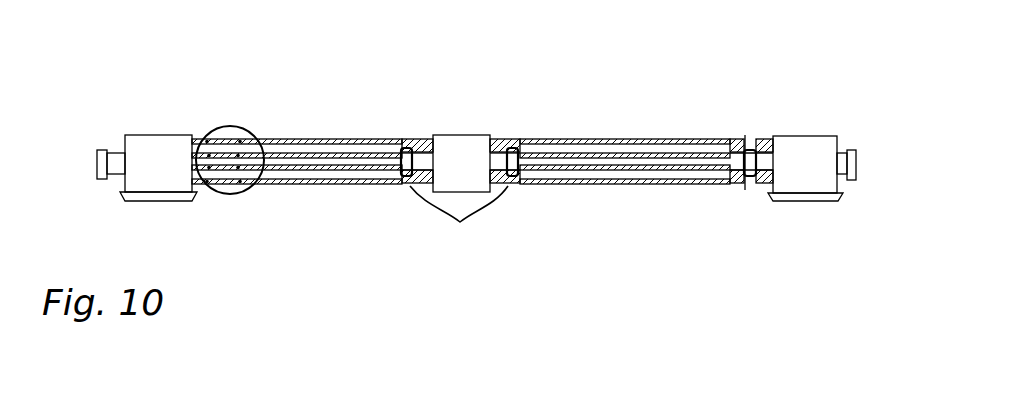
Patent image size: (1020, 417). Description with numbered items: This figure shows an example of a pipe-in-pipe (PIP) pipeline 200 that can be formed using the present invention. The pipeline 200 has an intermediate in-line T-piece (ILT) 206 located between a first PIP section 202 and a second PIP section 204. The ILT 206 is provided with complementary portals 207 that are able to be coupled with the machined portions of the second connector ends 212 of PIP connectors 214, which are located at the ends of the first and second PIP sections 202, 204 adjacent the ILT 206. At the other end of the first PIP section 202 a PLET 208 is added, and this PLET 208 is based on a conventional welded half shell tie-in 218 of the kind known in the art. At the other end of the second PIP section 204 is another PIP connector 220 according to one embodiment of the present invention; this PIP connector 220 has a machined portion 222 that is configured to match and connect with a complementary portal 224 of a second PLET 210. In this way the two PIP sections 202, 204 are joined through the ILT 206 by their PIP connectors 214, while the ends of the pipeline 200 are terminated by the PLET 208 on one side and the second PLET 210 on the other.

The PIP pipeline 200 is at (783, 281).
The first PIP section 202 is at (308, 139).
The second PIP section 204 is at (620, 139).
The in-line T-piece (ILT) 206 is at (454, 128).
The complementary portals 207 is at (459, 222).
The PLET 208 is at (153, 202).
The second PLET 210 is at (807, 202).
The second connector ends 212 is at (385, 118).
The PIP connectors 214 is at (387, 198).
The welded half shell tie-in 218 is at (218, 127).
The PIP connector 220 is at (725, 186).
The machined portion 222 is at (747, 182).
The complementary portal 224 is at (768, 139).